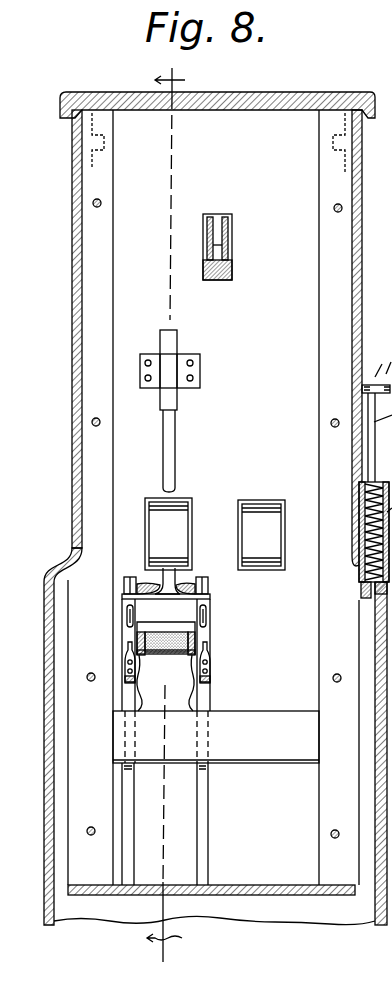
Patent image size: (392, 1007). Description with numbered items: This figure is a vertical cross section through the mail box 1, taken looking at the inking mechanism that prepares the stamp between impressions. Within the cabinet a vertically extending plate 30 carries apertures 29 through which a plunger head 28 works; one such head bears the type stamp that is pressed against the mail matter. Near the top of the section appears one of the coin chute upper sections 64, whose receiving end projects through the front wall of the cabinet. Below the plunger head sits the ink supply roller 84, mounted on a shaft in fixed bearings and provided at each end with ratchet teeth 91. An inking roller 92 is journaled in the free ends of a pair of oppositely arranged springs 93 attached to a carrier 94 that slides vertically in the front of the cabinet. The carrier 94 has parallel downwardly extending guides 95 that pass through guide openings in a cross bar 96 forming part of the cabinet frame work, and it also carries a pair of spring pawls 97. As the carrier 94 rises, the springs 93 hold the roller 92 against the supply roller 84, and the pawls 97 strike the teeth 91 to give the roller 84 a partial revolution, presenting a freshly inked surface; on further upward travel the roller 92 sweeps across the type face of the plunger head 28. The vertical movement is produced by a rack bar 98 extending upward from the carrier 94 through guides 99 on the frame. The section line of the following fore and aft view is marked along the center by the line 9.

The mail box 1 is at (45, 731).
The push rod 9 is at (166, 517).
The plunger head 28 is at (255, 533).
The apertures 29 is at (238, 552).
The vertically extending plate 30 is at (292, 488).
The coin chute upper sections 64 is at (232, 237).
The ink supply roller 84 is at (180, 590).
The ratchet teeth 91 is at (124, 582).
The inking roller 92 is at (160, 638).
The springs 93 is at (191, 661).
The carrier 94 is at (180, 605).
The guides 95 is at (128, 781).
The cross bar 96 is at (272, 752).
The spring pawls 97 is at (127, 632).
The rack bar 98 is at (170, 440).
The guides 99 is at (172, 366).